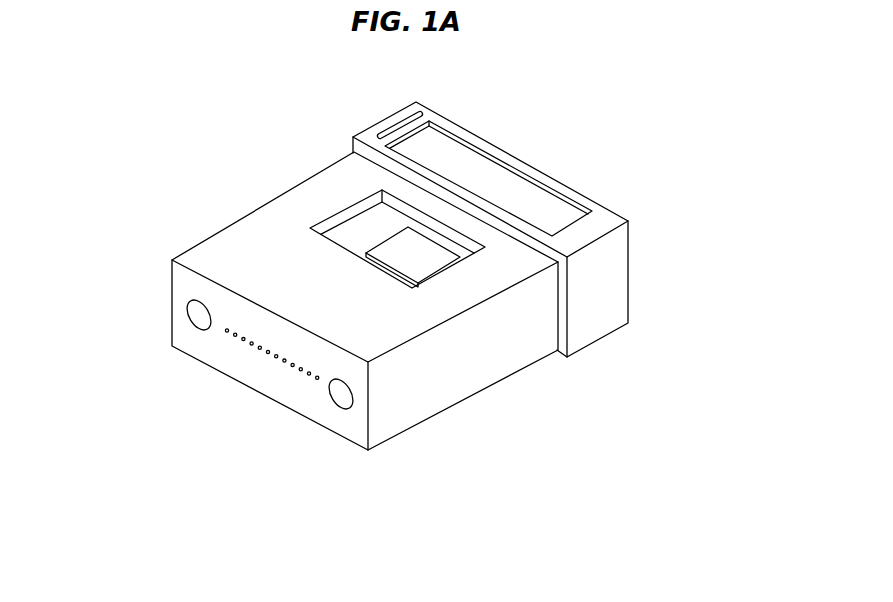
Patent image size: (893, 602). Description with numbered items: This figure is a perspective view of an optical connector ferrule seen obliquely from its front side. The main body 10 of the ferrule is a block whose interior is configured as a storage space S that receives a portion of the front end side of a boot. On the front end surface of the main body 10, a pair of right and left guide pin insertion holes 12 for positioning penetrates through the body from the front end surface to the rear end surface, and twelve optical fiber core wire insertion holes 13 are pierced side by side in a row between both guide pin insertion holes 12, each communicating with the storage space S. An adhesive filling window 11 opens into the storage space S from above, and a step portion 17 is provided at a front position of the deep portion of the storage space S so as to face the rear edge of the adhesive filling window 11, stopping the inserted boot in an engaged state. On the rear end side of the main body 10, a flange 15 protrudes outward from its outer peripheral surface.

The main body of the ferrule 10 is at (256, 189).
The adhesive filling window 11 is at (336, 216).
The guide pin insertion holes 12 is at (198, 330).
The optical fiber core wire insertion holes 13 is at (317, 383).
The flange 15 is at (585, 320).
The step portion 17 is at (403, 262).
The storage space S is at (434, 258).